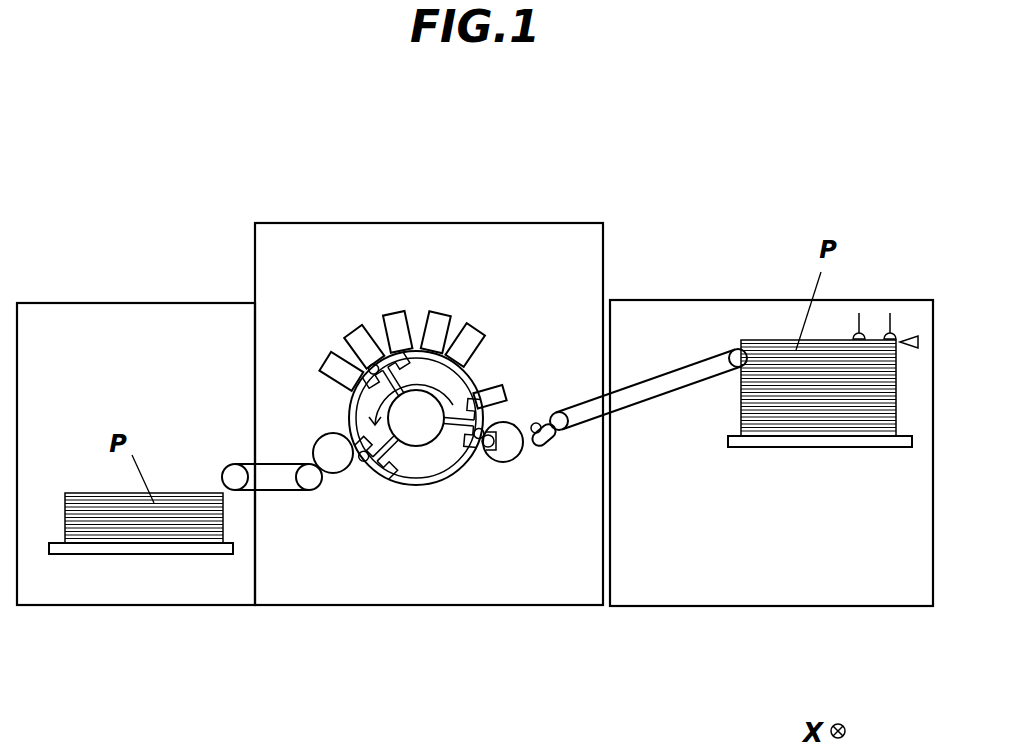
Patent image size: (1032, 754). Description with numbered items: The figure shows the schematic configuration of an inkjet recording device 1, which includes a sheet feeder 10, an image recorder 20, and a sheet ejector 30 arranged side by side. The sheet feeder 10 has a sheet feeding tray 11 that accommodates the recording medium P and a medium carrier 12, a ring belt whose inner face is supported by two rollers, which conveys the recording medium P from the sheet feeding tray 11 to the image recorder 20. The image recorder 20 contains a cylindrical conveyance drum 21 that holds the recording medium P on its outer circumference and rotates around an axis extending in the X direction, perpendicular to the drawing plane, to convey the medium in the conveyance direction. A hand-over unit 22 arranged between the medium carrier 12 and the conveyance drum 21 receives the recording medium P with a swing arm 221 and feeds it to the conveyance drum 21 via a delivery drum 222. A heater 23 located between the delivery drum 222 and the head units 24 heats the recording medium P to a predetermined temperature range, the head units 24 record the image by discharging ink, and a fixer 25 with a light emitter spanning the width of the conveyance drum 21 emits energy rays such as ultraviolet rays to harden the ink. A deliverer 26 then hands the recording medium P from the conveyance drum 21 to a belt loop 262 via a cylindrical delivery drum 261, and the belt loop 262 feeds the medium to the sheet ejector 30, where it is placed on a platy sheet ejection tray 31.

The inkjet recording device 1 is at (793, 149).
The sheet feeder 10 is at (895, 298).
The sheet feeding tray 11 is at (828, 443).
The medium carrier 12 is at (658, 378).
The image recorder 20 is at (343, 222).
The conveyance drum 21 is at (450, 447).
The hand-over unit 22 is at (557, 281).
The swing arm 221 is at (547, 423).
The delivery drum 222 is at (513, 430).
The heater 23 is at (490, 380).
The head units 24 is at (470, 320).
The fixer 25 is at (336, 368).
The deliverer 26 is at (309, 571).
The delivery drum 261 is at (334, 458).
The belt loop 262 is at (277, 492).
The sheet ejector 30 is at (87, 302).
The sheet ejection tray 31 is at (130, 551).